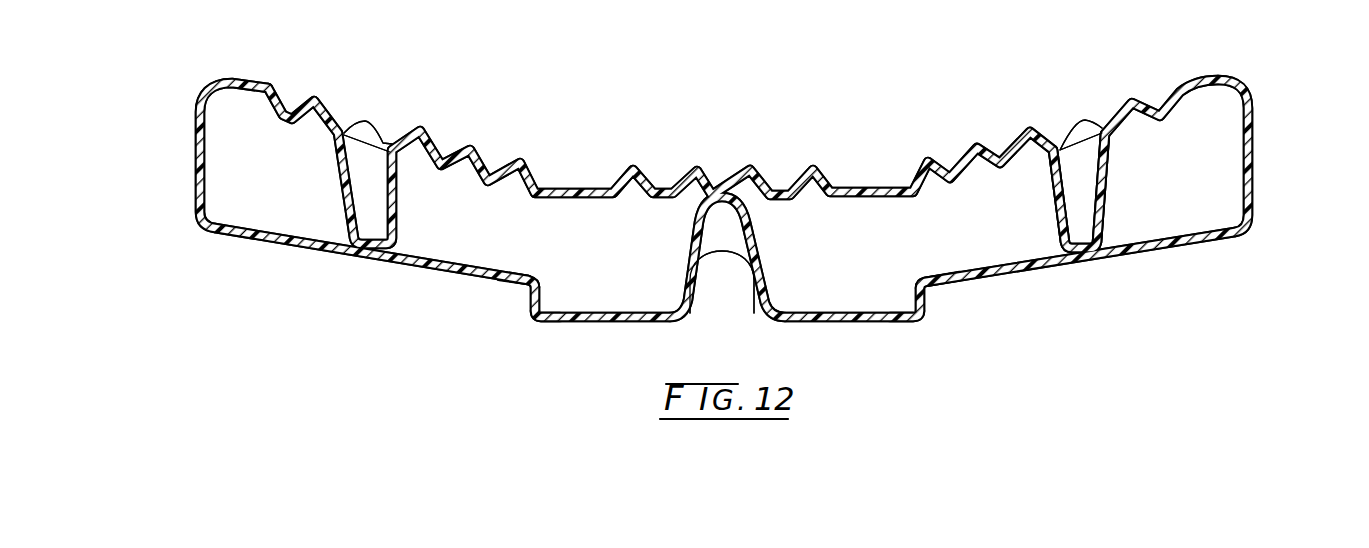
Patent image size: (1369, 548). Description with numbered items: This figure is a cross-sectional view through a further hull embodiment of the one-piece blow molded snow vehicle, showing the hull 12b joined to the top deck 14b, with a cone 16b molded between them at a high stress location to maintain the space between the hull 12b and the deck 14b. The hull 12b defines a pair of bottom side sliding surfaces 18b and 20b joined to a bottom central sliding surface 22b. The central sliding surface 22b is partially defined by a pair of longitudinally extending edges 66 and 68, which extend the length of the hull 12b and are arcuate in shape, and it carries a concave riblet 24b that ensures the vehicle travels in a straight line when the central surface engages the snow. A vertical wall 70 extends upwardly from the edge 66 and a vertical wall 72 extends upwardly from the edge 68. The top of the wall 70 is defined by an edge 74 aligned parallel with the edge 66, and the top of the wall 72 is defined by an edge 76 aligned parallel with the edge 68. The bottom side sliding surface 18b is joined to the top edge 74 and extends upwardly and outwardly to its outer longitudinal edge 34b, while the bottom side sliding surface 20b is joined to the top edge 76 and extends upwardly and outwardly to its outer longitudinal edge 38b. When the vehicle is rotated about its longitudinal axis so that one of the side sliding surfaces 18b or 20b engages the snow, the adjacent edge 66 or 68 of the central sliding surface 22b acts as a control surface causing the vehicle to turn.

The hull 12b is at (601, 325).
The top deck 14b is at (827, 182).
The cone 16b is at (1057, 207).
The bottom side sliding surface 18b is at (408, 274).
The bottom side sliding surface 20b is at (1165, 248).
The bottom central sliding surface 22b is at (873, 325).
The concave riblet 24b is at (692, 285).
The longitudinally extending edge 34b is at (205, 232).
The longitudinally extending edge 38b is at (1243, 228).
The longitudinally extending edge 66 is at (533, 322).
The longitudinally extending edge 68 is at (920, 322).
The vertical wall 70 is at (532, 303).
The vertical wall 72 is at (928, 305).
The top edge 74 is at (527, 289).
The top edge 76 is at (928, 290).